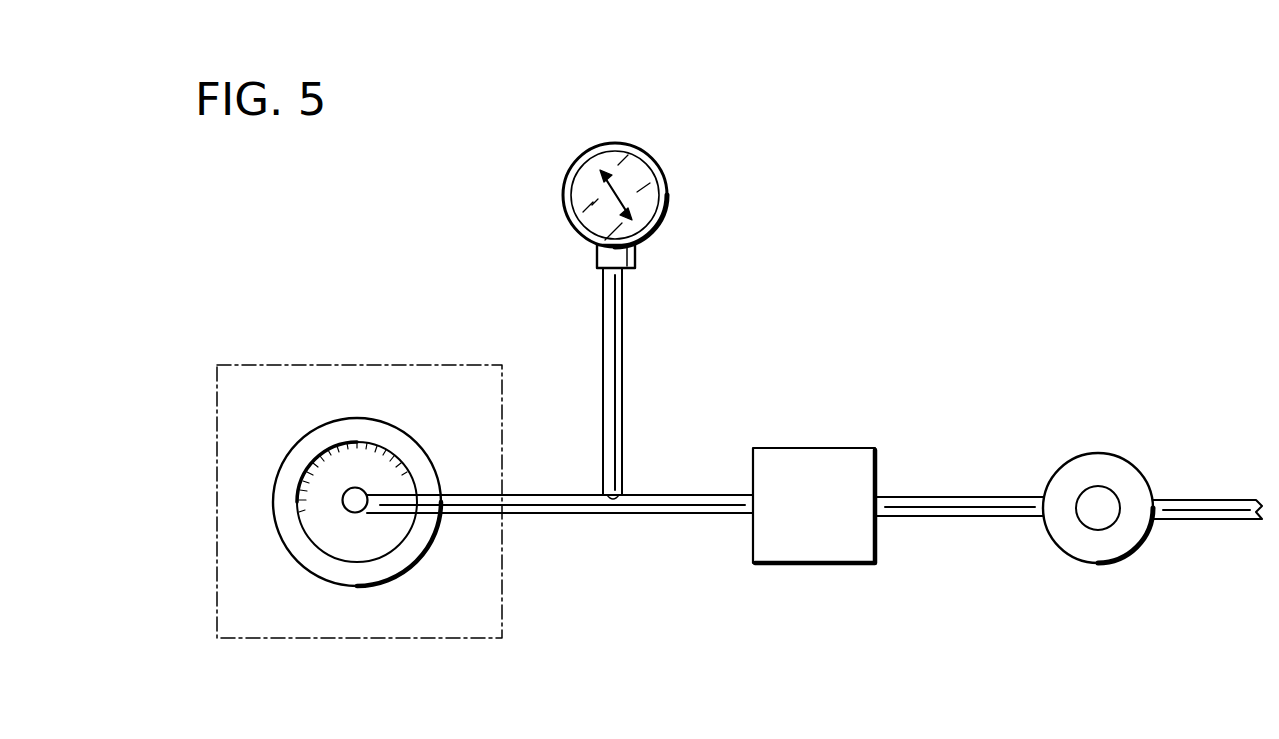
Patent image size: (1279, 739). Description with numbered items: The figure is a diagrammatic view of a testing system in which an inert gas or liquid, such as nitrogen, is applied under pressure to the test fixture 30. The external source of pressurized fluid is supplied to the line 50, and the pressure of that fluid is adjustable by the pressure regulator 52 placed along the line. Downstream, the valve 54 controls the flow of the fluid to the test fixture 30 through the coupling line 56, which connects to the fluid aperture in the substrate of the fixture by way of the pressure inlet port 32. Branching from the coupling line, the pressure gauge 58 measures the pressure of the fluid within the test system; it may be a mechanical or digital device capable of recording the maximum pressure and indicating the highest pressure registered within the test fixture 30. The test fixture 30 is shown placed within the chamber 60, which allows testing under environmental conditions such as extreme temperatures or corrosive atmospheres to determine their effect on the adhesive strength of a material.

The test fixture 30 is at (272, 528).
The pressure inlet port 32 is at (357, 488).
The line 50 is at (1200, 519).
The pressure regulator 52 is at (1097, 452).
The valve 54 is at (807, 448).
The coupling line 56 is at (532, 513).
The pressure gauge 58 is at (667, 180).
The chamber 60 is at (217, 440).